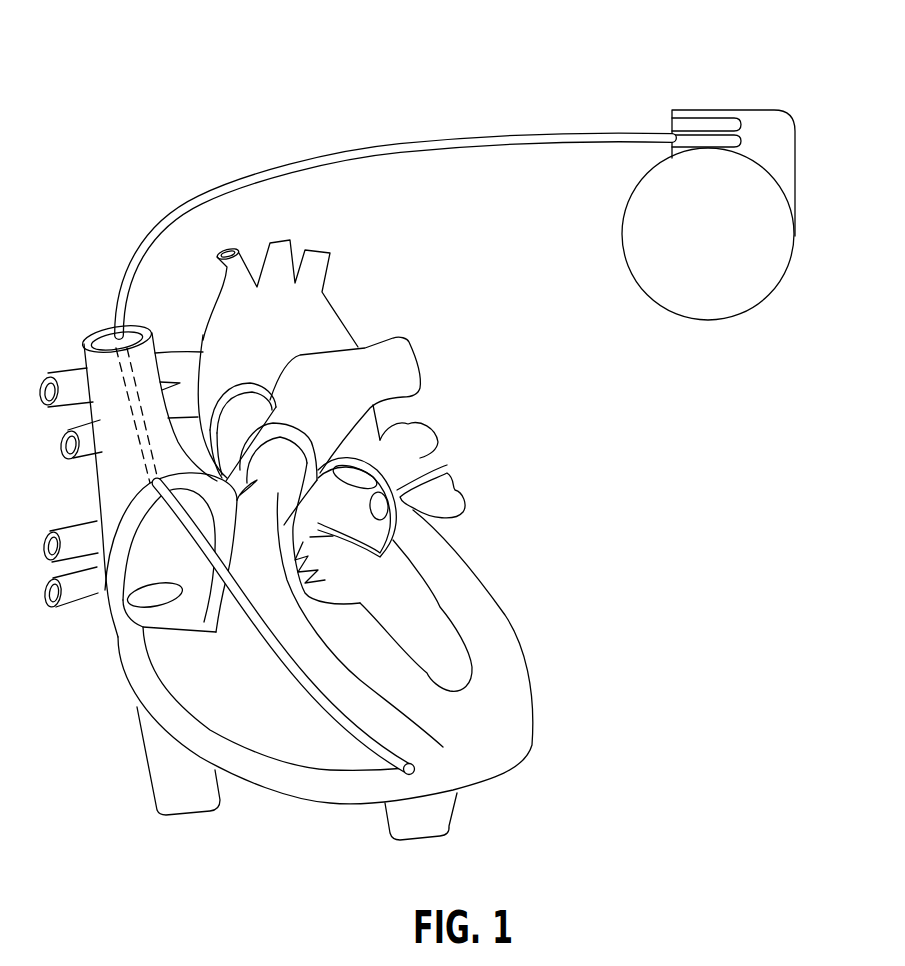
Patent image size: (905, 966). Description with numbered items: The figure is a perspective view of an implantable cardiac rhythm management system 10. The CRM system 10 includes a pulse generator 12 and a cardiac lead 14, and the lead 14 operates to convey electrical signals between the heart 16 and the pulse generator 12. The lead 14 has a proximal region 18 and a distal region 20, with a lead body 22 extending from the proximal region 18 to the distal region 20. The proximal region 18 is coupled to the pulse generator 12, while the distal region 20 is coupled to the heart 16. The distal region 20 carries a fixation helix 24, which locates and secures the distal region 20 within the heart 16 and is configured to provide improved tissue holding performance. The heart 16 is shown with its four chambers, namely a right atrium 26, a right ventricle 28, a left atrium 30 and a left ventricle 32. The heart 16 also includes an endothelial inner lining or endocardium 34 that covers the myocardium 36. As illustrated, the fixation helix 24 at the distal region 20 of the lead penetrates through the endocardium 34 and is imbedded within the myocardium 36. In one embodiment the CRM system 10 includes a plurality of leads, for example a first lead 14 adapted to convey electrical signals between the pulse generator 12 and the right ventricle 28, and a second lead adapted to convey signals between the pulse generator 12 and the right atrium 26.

The implantable cardiac rhythm management (CRM) system 10 is at (95, 198).
The pulse generator 12 is at (808, 86).
The cardiac lead 14 is at (362, 146).
The heart 16 is at (462, 377).
The proximal region 18 is at (633, 130).
The distal region 20 is at (353, 733).
The lead body 22 is at (168, 207).
The fixation helix 24 is at (415, 773).
The right atrium 26 is at (140, 547).
The right ventricle 28 is at (173, 670).
The left atrium 30 is at (390, 483).
The left ventricle 32 is at (440, 643).
The endocardium 34 is at (220, 735).
The myocardium 36 is at (267, 785).